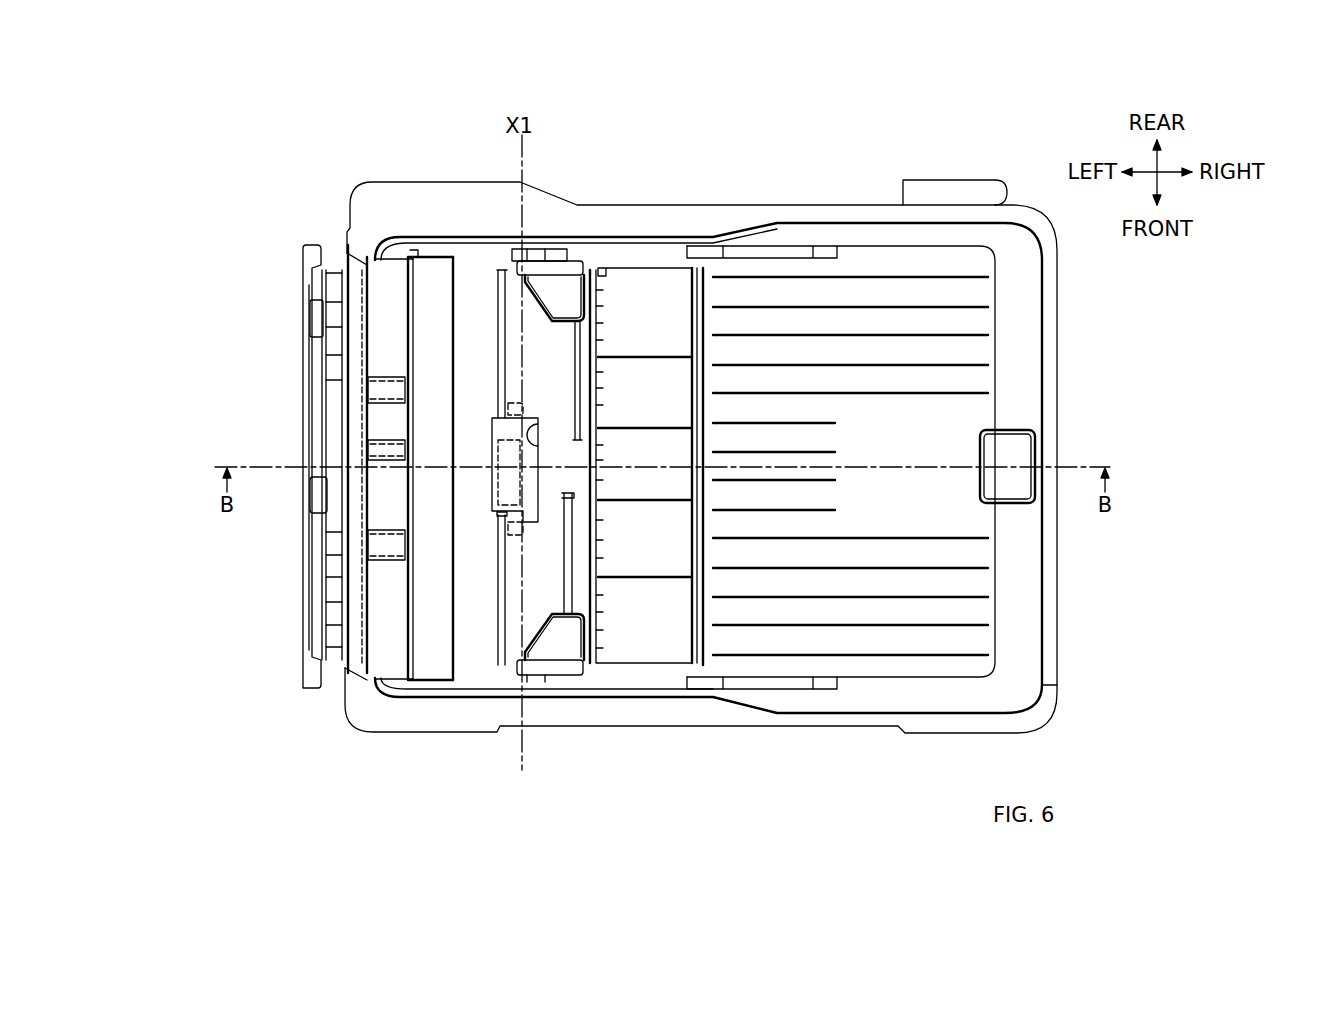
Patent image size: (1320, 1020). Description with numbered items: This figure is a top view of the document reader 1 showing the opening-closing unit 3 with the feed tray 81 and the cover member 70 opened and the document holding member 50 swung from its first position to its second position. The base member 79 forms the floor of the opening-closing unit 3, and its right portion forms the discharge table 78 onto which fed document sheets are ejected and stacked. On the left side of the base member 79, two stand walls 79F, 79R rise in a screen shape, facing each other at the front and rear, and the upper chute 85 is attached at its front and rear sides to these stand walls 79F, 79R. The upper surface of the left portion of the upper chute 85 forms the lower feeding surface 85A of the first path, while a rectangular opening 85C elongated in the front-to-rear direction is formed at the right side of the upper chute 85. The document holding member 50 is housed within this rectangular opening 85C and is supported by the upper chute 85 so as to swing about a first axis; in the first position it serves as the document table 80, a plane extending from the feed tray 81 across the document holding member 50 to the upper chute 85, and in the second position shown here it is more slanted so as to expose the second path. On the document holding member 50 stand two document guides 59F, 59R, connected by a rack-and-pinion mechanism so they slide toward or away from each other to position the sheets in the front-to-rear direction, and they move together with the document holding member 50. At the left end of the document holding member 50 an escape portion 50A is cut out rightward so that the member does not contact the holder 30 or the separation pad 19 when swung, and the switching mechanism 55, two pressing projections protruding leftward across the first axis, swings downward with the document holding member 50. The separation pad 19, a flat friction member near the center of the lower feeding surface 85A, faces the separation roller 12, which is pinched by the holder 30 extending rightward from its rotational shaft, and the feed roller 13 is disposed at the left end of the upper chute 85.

The document reader 1 is at (305, 141).
The opening-closing unit 3 is at (388, 740).
The separation roller 12 is at (340, 459).
The separation pad 19 is at (500, 480).
The feed roller 13 is at (383, 392).
The holder 30 is at (506, 439).
The document holding member 50 is at (540, 652).
The escape portion 50A is at (545, 423).
The switching mechanism 55 is at (507, 409).
The document guide 59F is at (575, 668).
The document guide 59R is at (553, 265).
The cover member 70 is at (305, 262).
The discharge table 78 is at (660, 265).
The base member 79 is at (1018, 648).
The stand wall 79F is at (655, 714).
The stand wall 79R is at (590, 216).
The document table 80 is at (547, 564).
The feed tray 81 is at (960, 418).
The upper chute 85 is at (478, 290).
The lower feeding surface 85A is at (494, 347).
The rectangular opening 85C is at (655, 300).